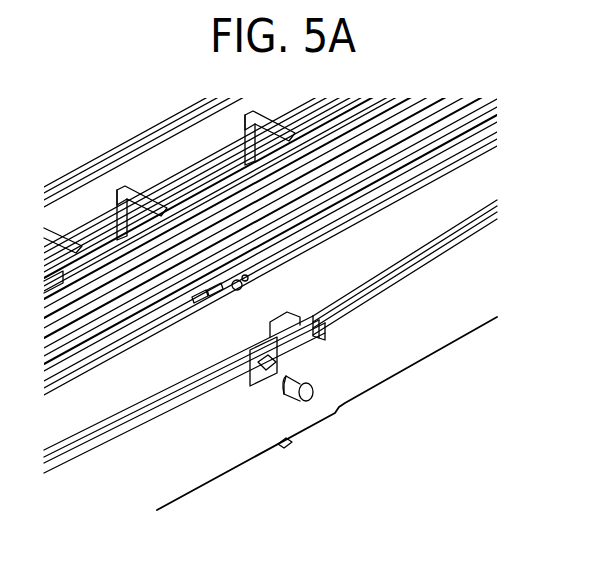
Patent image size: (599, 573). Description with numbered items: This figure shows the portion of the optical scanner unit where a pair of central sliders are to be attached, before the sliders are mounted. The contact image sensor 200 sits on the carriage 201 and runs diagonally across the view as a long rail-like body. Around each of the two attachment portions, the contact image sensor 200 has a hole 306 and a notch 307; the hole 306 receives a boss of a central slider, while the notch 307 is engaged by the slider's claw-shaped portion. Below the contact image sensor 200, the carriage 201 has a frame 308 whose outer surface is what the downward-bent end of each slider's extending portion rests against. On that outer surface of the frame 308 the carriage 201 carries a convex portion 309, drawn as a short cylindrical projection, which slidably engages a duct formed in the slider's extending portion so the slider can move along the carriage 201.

The contact image sensor 200 is at (417, 205).
The carriage 201 is at (380, 340).
The hole 306 is at (237, 290).
The notch 307 is at (277, 333).
The frame 308 is at (393, 287).
The convex portion 309 is at (317, 390).